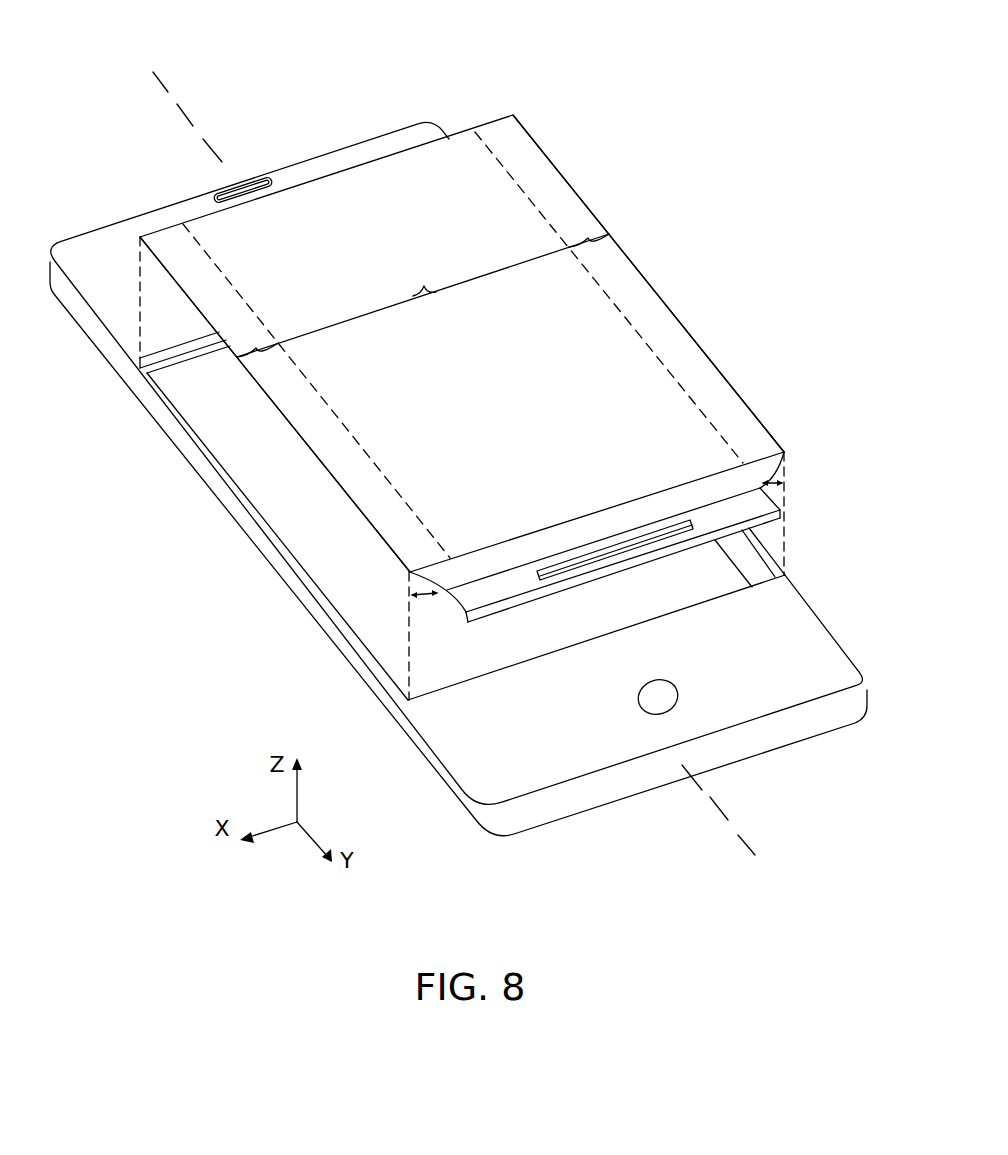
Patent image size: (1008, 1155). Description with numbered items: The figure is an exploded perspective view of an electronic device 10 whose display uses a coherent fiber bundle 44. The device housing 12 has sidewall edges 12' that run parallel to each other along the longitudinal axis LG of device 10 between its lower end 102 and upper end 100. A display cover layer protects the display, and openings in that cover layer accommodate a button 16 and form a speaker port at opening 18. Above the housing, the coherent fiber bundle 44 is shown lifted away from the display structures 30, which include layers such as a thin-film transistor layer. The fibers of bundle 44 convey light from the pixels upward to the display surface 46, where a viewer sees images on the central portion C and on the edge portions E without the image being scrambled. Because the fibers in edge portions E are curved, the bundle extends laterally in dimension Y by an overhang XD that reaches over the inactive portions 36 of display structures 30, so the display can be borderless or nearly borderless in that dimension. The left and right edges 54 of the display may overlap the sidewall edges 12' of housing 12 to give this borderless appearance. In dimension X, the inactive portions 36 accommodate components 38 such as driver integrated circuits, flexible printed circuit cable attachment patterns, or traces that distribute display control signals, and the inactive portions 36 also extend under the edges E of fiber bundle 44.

The electronic device 10 is at (413, 55).
The upper end 100 is at (96, 198).
The lower end 102 is at (450, 824).
The opening 18 is at (252, 181).
The button 16 is at (642, 708).
The device housing 12 is at (462, 484).
The sidewall edges 12' is at (499, 536).
The display surface 46 is at (669, 317).
The left and right edges 54 is at (636, 262).
The coherent fiber bundle 44 is at (776, 400).
The display structures 30 is at (495, 590).
The inactive portions 36 is at (752, 503).
The components 38 is at (593, 555).
The central portion C is at (424, 280).
The edge portions E is at (423, 284).
The overhang XD is at (766, 483).
The longitudinal axis LG is at (160, 73).